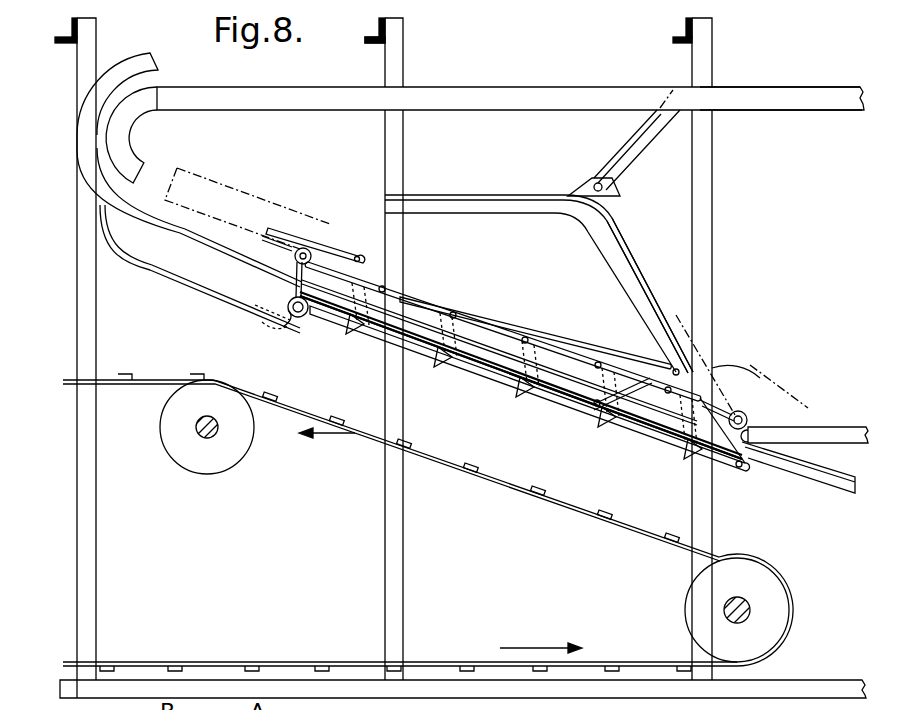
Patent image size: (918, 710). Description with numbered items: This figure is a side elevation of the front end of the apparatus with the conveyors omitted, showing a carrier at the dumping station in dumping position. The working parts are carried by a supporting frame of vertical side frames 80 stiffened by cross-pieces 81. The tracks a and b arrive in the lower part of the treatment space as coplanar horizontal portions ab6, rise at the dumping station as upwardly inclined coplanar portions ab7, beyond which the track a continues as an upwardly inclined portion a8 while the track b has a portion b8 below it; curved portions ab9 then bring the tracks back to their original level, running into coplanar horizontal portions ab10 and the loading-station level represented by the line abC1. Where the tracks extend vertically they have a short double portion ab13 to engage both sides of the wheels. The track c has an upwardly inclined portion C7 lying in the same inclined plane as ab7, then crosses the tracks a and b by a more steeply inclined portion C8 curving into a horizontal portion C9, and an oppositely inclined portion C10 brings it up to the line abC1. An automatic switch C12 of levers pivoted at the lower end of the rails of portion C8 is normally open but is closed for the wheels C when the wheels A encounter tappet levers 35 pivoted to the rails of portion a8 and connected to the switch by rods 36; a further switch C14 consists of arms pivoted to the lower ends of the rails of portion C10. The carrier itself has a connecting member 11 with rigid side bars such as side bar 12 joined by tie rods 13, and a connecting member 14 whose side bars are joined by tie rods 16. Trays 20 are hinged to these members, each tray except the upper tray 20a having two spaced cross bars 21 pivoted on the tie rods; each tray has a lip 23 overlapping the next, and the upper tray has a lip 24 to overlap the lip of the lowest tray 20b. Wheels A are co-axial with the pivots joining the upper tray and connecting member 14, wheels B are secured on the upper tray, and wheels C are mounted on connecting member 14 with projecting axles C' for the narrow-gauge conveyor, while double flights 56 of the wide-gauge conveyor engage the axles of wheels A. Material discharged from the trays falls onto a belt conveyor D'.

The vertical side frames 80 is at (96, 555).
The cross-pieces 81 is at (372, 45).
The coplanar horizontal portions of tracks a and b ab10 is at (522, 96).
The line representing coplanar horizontal tracks at loading station abC1 is at (807, 98).
The curved portions of tracks a and b ab9 is at (138, 131).
The double track portion ab13 is at (113, 100).
The tie rods 13 is at (82, 93).
The upwardly inclined portion of track a a8 is at (193, 241).
The portion of track b b8 is at (147, 280).
The horizontal portion of track c C9 is at (474, 212).
The steeply inclined portion of track c C8 is at (630, 287).
The automatic switch C14 is at (567, 195).
The oppositely inclined portion of track c C10 is at (648, 136).
The connecting member 14 is at (413, 297).
The rods 36 is at (474, 337).
The lip 23 is at (583, 353).
The connecting member 11 is at (558, 403).
The upwardly inclined coplanar portions of tracks a and b ab7 is at (540, 378).
The cross bars 21 is at (497, 381).
The carrying elements or trays 20 is at (352, 338).
The lowest tray 20b is at (716, 463).
The wheels A is at (310, 240).
The double flights 56 is at (323, 248).
The tappet levers 35 is at (287, 246).
The wheels B is at (298, 318).
The upper tray 20a is at (253, 294).
The lip 24 is at (263, 323).
The tie rods 16 is at (597, 400).
The side bar 12 is at (696, 320).
The automatic switch C12 is at (765, 360).
The wheels C is at (749, 414).
The projecting axles C' is at (761, 436).
The coplanar horizontal portions of tracks a and b ab6 is at (837, 432).
The upwardly inclined portion of track c C7 is at (810, 472).
The belt conveyor D' is at (428, 522).